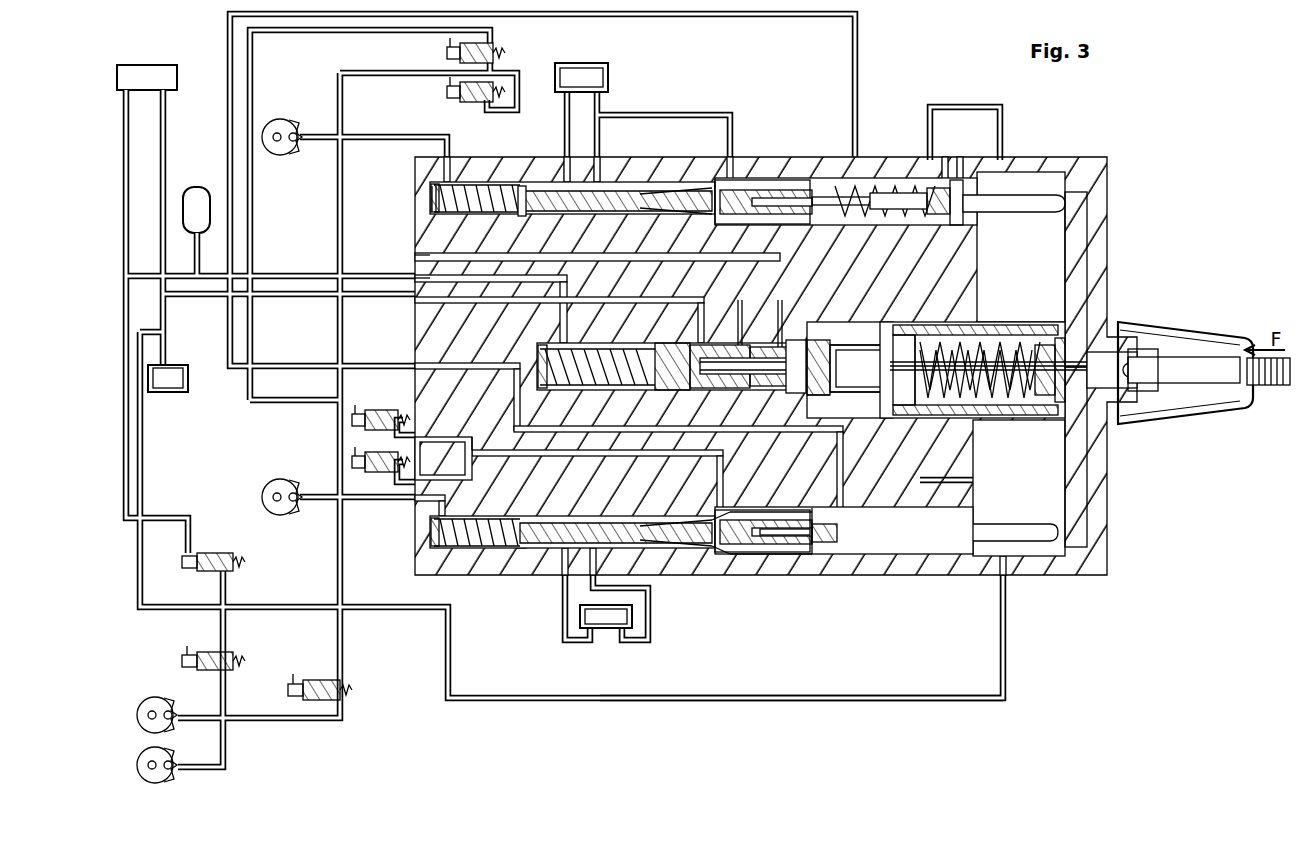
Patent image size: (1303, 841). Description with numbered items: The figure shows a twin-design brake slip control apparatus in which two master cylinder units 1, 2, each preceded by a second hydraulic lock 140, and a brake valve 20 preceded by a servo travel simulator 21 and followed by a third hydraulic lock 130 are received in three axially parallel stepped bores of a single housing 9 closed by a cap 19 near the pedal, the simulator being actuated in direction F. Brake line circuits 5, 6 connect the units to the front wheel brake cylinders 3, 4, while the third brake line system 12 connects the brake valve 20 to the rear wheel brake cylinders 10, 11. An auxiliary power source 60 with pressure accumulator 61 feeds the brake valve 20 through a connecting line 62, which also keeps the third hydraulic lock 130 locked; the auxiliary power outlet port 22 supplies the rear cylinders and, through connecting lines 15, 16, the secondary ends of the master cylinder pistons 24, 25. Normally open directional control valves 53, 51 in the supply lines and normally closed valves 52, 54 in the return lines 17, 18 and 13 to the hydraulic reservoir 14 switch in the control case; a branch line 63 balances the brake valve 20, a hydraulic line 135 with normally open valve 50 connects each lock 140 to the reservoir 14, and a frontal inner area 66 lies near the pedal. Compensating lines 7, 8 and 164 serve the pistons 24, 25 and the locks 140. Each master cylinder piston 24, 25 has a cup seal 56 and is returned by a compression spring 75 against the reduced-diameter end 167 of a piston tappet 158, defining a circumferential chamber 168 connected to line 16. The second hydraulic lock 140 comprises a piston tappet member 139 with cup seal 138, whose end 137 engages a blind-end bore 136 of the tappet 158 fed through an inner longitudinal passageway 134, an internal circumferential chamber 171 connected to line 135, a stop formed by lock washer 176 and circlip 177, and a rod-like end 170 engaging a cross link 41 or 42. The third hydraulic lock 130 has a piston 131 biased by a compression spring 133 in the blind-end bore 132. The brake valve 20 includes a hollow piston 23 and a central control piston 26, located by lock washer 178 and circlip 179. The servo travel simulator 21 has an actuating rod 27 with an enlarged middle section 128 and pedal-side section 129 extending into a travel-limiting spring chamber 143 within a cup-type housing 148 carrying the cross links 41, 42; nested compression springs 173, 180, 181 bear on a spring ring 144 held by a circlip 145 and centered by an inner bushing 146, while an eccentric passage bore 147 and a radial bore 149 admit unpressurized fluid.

The master cylinder unit 1 is at (432, 180).
The master cylinder unit 2 is at (432, 545).
The wheel brake cylinder 3 is at (302, 124).
The wheel brake cylinder 4 is at (289, 514).
The brake line circuit 5 is at (372, 136).
The brake line circuit 6 is at (305, 499).
The compensating line 7 is at (566, 95).
The compensating line 8 is at (576, 641).
The housing 9 is at (482, 570).
The wheel brake cylinder 10 is at (176, 710).
The wheel brake cylinder 11 is at (176, 758).
The third brake line system 12 is at (342, 655).
The return line 13 is at (162, 610).
The hydraulic reservoir 14 is at (608, 70).
The connecting line 15 is at (672, 114).
The connecting line 16 is at (593, 457).
The return line 17 is at (282, 30).
The return line 18 is at (432, 408).
The cap 19 is at (1050, 576).
The brake valve 20 is at (812, 322).
The servo travel simulator 21 is at (920, 322).
The auxiliary power outlet port 22 is at (776, 335).
The hollow piston 23 is at (736, 335).
The master cylinder piston 24 is at (640, 190).
The master cylinder piston 25 is at (664, 545).
The control piston 26 is at (718, 390).
The actuating rod 27 is at (1000, 422).
The cross link 41 is at (1076, 226).
The cross link 42 is at (1100, 524).
The directional control valve 50 is at (215, 572).
The directional control valve 51 is at (446, 94).
The directional control valve 52 is at (446, 52).
The directional control valve 53 is at (318, 682).
The directional control valve 54 is at (215, 652).
The cup seal 56 is at (522, 186).
The auxiliary power source 60 is at (137, 66).
The pressure accumulator 61 is at (197, 190).
The connecting line 62 is at (292, 274).
The branch line 63 is at (292, 297).
The frontal inner area 66 is at (727, 701).
The compression spring 75 is at (430, 198).
The enlarged-diameter middle section 128 is at (860, 368).
The section of the actuating rod 129 is at (886, 392).
The third hydraulic lock 130 is at (615, 344).
The piston 131 is at (672, 345).
The blind-end bore 132 is at (432, 310).
The compression spring 133 is at (432, 320).
The inner longitudinal passageway 134 is at (805, 185).
The hydraulic line 135 is at (745, 17).
The blind-end bore 136 is at (760, 548).
The end of the piston tappet member 137 is at (790, 546).
The cup seal 138 is at (940, 548).
The piston tappet member 139 is at (880, 540).
The second hydraulic lock 140 is at (887, 182).
The travel-limiting spring chamber 143 is at (955, 330).
The spring ring 144 is at (914, 336).
The circlip 145 is at (900, 336).
The inner bushing 146 is at (996, 340).
The eccentric passage bore 147 is at (888, 344).
The housing 148 is at (975, 340).
The radial bore 149 is at (1042, 345).
The piston tappet 158 is at (822, 545).
The compensating line 164 is at (965, 108).
The reduced-diameter end 167 is at (735, 548).
The circumferential chamber 168 is at (772, 548).
The rod-like end 170 is at (1028, 195).
The internal circumferential chamber 171 is at (845, 555).
The compression spring 173 is at (1072, 300).
The lock washer 176 is at (946, 160).
The circlip 177 is at (962, 165).
The lock washer 178 is at (800, 392).
The circlip 179 is at (812, 395).
The compression spring 180 is at (1095, 305).
The compression spring 181 is at (1110, 326).